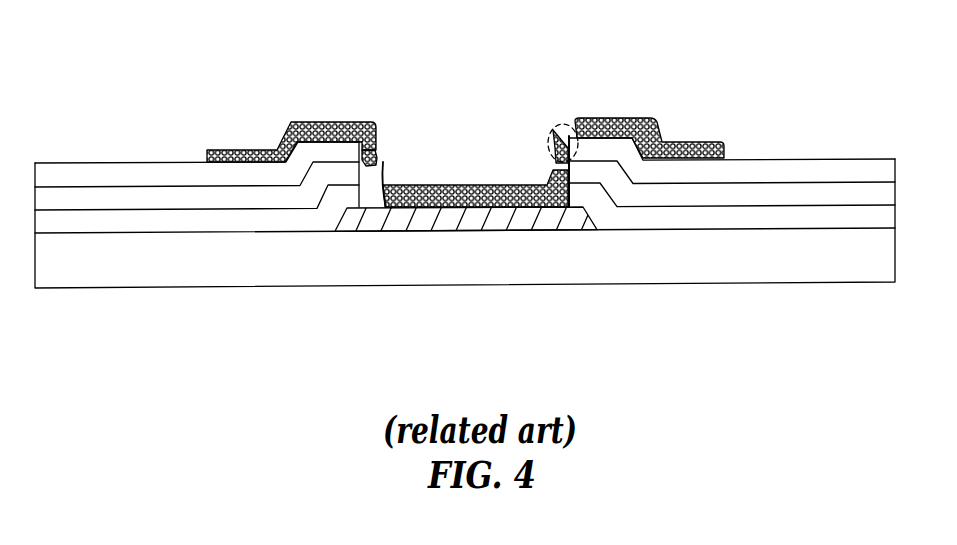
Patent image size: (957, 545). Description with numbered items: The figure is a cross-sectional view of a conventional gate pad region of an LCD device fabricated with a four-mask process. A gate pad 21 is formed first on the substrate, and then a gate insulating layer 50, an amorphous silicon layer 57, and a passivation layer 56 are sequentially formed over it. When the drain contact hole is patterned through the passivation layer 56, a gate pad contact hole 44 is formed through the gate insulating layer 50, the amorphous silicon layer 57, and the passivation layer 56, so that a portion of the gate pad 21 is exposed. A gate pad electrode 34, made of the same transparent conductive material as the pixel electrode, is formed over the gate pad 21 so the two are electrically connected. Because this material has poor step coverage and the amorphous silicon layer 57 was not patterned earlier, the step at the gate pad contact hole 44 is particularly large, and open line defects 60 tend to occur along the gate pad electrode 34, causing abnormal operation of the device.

The gate pad 21 is at (485, 223).
The gate pad electrode 34 is at (329, 121).
The gate pad contact hole 44 is at (466, 118).
The gate insulating layer 50 is at (253, 227).
The passivation layer 56 is at (57, 176).
The amorphous silicon layer 57 is at (126, 198).
The open line defects 60 is at (388, 162).